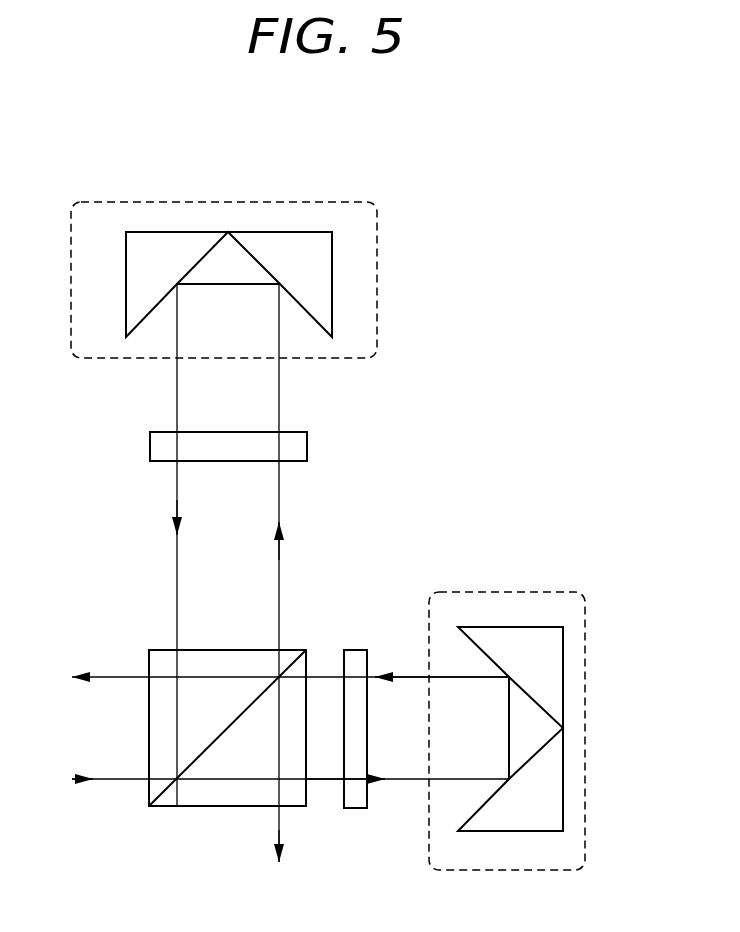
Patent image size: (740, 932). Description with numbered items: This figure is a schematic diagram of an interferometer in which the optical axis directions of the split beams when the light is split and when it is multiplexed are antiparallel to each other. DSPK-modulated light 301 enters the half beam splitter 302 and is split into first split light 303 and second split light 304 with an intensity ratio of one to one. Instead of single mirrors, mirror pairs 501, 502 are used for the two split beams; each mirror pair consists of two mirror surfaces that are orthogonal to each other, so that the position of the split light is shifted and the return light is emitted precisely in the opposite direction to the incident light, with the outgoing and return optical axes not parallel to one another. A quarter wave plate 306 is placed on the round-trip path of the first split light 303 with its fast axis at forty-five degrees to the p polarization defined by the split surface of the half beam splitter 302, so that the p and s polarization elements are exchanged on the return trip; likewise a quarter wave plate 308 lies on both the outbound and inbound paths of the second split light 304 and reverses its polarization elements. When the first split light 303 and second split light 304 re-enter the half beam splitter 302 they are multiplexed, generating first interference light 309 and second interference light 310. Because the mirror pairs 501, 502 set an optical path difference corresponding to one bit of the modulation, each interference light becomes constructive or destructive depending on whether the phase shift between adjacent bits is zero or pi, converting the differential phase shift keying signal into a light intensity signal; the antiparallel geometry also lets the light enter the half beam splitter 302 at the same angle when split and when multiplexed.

The DSPK-modulated light 301 is at (112, 775).
The half beam splitter 302 is at (178, 795).
The first split light 303 is at (175, 502).
The second split light 304 is at (323, 780).
The quarter wave plate 306 is at (298, 448).
The quarter wave plate 308 is at (357, 655).
The first interference light 309 is at (117, 672).
The second interference light 310 is at (272, 830).
The mirror pair 501 is at (377, 266).
The mirror pair 502 is at (510, 590).